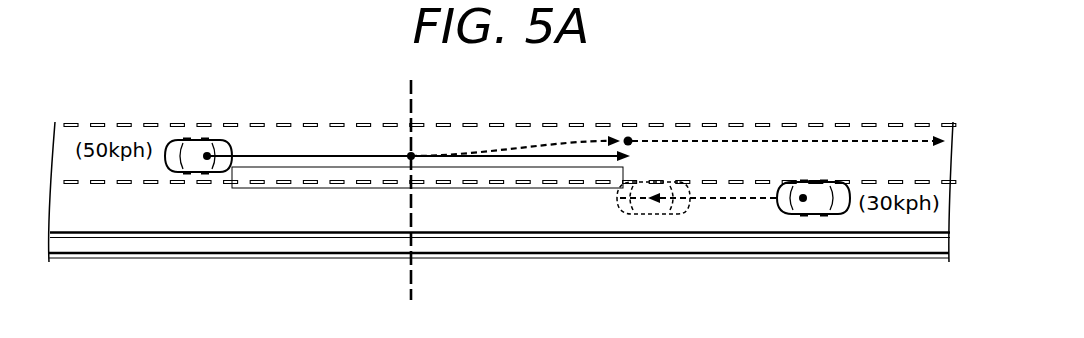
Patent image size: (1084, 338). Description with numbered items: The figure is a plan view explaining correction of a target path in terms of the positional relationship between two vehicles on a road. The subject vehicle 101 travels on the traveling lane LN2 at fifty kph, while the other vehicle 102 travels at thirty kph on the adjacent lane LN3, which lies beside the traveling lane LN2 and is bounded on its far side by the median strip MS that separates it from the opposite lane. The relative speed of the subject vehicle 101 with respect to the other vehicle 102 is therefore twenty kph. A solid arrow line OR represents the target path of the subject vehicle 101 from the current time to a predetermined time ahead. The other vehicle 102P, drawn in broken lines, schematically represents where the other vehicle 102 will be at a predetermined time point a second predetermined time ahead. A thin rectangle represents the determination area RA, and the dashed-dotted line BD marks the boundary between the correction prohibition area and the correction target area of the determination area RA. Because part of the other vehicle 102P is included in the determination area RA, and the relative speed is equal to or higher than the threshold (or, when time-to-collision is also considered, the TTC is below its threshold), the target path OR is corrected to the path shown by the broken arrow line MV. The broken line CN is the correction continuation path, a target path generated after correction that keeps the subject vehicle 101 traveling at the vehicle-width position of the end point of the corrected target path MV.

The subject vehicle 101 is at (198, 139).
The other vehicle 102 is at (828, 215).
The other vehicle at predetermined time point 102P is at (650, 212).
The boundary BD is at (413, 93).
The target path OR is at (588, 155).
The corrected target path MV is at (558, 142).
The traveling lane LN2 is at (700, 125).
The adjacent lane LN3 is at (727, 223).
The correction continuation path CN is at (830, 140).
The determination area RA is at (558, 188).
The median strip MS is at (898, 243).